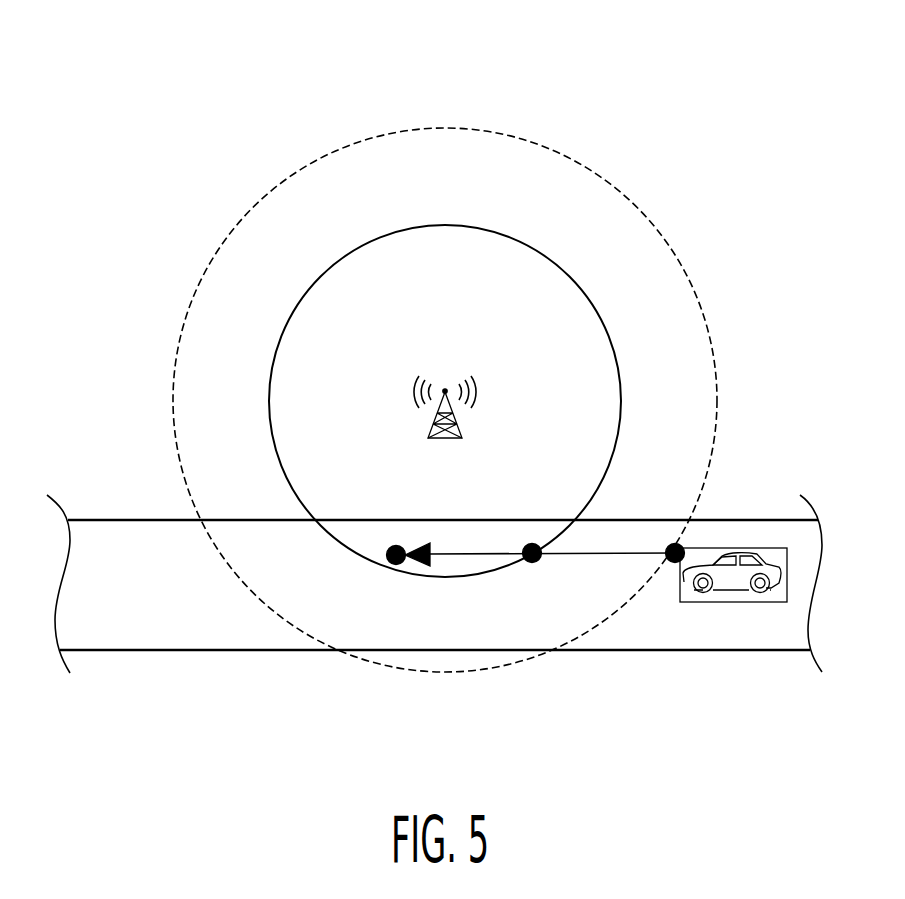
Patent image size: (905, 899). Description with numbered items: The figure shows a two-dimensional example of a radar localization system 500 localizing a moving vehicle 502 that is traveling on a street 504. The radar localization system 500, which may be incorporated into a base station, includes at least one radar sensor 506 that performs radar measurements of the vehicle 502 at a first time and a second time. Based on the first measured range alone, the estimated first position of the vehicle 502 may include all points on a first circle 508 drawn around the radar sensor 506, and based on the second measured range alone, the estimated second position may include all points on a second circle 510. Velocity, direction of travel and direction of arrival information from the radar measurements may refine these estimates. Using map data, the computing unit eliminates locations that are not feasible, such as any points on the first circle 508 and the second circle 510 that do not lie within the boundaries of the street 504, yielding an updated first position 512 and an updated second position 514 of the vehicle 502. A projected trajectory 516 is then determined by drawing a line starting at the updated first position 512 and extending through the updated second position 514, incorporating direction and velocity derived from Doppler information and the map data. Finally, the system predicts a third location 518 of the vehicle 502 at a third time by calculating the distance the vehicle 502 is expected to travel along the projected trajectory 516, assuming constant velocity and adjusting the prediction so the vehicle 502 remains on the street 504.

The radar localization system 500 is at (404, 373).
The vehicle 502 is at (750, 602).
The street 504 is at (145, 651).
The radar sensor 506 is at (445, 389).
The first circle 508 is at (655, 226).
The second circle 510 is at (375, 241).
The updated first position 512 is at (683, 551).
The updated second position 514 is at (531, 545).
The projected trajectory 516 is at (455, 552).
The predicted third location 518 is at (390, 550).